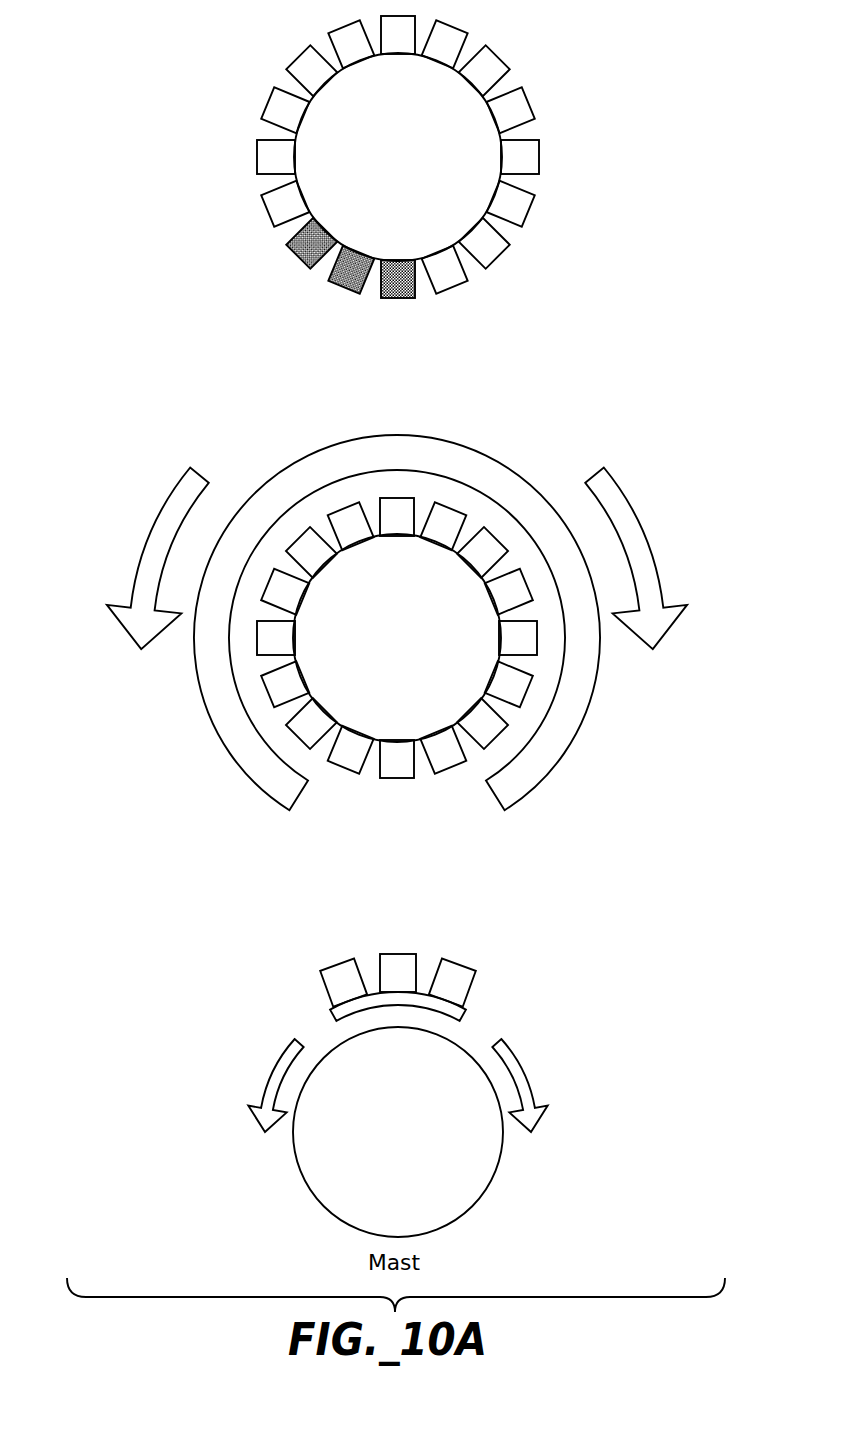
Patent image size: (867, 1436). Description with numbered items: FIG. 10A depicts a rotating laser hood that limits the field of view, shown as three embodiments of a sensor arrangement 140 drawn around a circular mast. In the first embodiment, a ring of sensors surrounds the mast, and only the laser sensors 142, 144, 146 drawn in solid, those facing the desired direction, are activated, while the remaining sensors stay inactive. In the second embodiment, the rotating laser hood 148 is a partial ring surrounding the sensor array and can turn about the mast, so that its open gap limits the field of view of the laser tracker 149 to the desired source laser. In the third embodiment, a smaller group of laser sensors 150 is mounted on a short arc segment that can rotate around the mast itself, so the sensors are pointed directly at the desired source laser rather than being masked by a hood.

The multi-element antenna assembly 140 is at (312, 177).
The laser sensor 142 is at (297, 257).
The laser sensor 144 is at (338, 288).
The laser sensor 146 is at (400, 305).
The rotating laser hood 148 is at (608, 431).
The laser tracker 149 is at (323, 774).
The laser sensors 150 is at (532, 948).